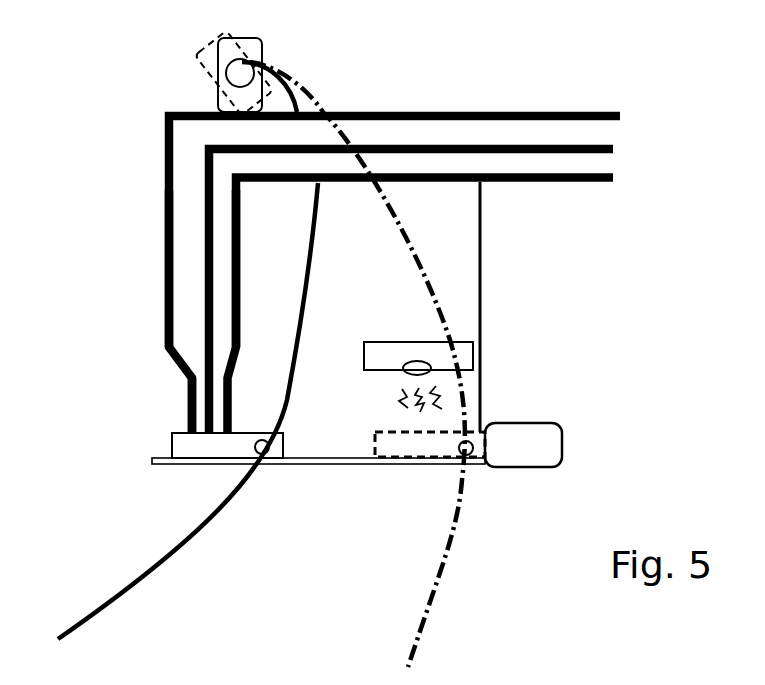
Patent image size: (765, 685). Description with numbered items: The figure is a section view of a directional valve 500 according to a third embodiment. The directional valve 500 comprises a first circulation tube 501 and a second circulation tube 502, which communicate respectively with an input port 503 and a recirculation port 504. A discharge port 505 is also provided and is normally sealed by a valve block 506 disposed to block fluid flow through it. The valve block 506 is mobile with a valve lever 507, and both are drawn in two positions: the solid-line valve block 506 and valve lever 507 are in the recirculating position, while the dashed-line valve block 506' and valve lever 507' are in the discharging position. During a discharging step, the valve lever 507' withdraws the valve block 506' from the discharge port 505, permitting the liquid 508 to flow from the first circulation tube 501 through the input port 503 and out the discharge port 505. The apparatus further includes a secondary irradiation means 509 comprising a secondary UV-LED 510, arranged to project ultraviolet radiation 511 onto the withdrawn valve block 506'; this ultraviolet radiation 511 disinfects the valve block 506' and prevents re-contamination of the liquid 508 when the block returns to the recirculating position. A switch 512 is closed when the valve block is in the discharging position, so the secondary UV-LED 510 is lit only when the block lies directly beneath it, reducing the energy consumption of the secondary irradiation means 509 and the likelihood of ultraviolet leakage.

The directional valve 500 is at (87, 145).
The first circulation tube 501 is at (577, 182).
The second circulation tube 502 is at (553, 112).
The input port 503 is at (223, 327).
The recirculation port 504 is at (185, 327).
The discharge port 505 is at (188, 413).
The valve block 506 is at (175, 434).
The valve block (discharging position) 506' is at (430, 473).
The valve lever 507 is at (188, 350).
The valve lever (discharging position) 507' is at (391, 364).
The liquid 508 is at (507, 160).
The secondary irradiation means 509 is at (468, 352).
The secondary UV-LED 510 is at (428, 357).
The ultraviolet radiation 511 is at (397, 393).
The switch 512 is at (522, 467).